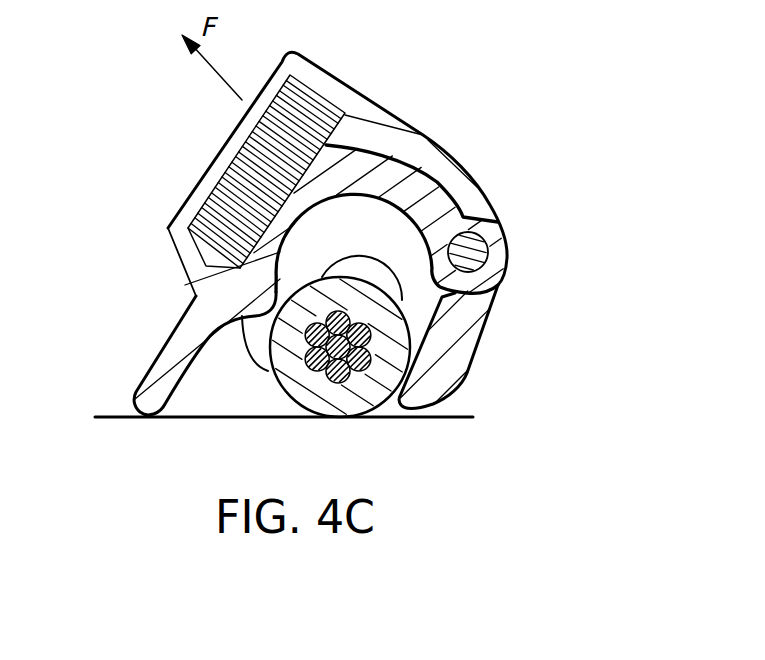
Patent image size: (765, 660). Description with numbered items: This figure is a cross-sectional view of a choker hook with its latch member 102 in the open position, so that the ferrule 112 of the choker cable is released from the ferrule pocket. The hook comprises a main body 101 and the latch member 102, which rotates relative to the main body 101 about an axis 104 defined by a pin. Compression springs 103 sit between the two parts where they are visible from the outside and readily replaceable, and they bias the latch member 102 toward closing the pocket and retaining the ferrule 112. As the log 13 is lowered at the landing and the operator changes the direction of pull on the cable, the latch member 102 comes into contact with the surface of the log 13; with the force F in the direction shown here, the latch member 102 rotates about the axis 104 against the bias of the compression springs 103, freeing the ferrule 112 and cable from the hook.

The log 13 is at (284, 441).
The main body 101 is at (337, 230).
The latch member 102 is at (175, 321).
The compression springs 103 is at (230, 171).
The axis 104 is at (522, 247).
The ferrule 112 is at (304, 347).